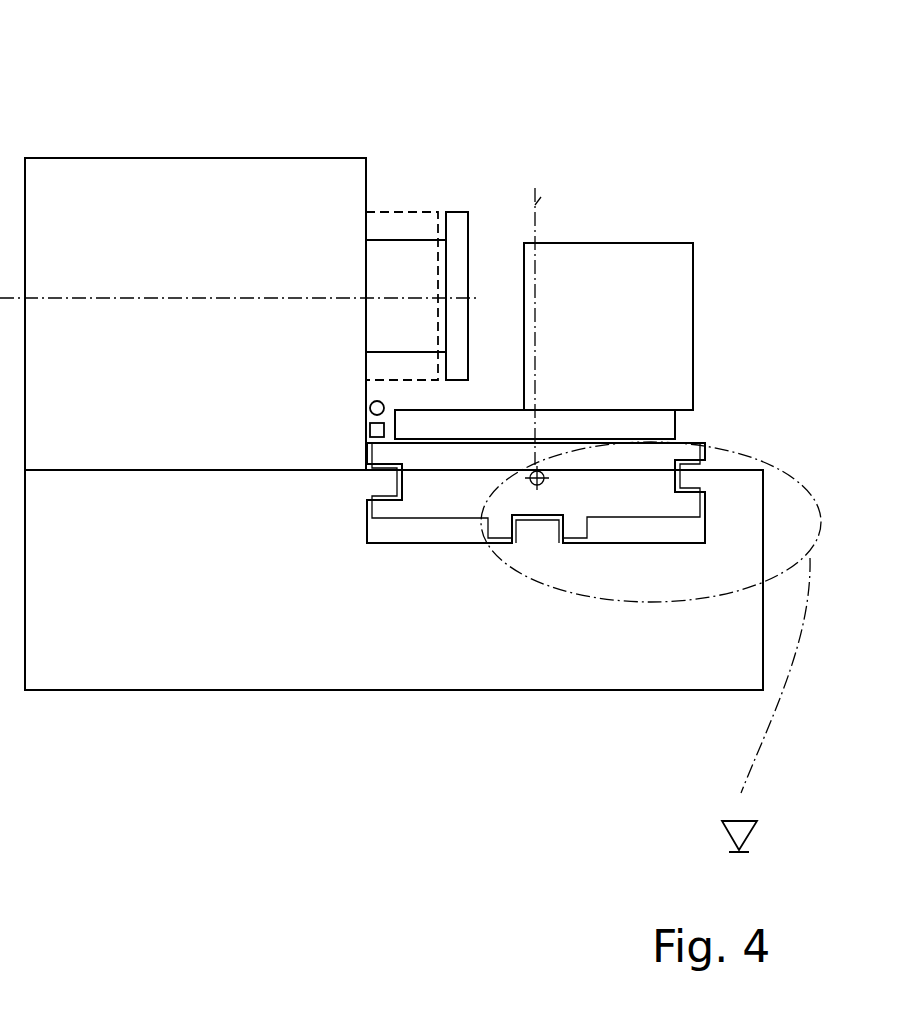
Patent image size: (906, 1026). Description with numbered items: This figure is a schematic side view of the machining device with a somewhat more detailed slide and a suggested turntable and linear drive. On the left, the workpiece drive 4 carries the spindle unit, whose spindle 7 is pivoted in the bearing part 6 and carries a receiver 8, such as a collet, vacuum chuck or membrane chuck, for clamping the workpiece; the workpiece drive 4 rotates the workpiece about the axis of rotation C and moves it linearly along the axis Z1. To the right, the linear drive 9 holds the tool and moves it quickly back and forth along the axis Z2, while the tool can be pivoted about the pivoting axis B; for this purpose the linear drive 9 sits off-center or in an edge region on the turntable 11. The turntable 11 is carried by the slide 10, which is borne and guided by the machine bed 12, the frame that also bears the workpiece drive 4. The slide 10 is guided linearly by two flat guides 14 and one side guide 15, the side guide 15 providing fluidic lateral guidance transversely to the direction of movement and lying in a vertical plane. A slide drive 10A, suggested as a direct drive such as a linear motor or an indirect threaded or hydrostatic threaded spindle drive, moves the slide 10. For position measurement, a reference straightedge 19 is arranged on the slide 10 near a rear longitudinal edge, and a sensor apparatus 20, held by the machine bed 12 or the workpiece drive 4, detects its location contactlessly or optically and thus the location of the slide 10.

The workpiece drive 4 is at (210, 185).
The sensor apparatus 20 is at (376, 401).
The spindle 7 is at (415, 253).
The bearing part 6 is at (437, 212).
The receiver 8 is at (458, 223).
The pivoting axis B is at (552, 188).
The linear drive 9 is at (626, 268).
The turntable 11 is at (656, 428).
The flat guide 14 is at (700, 480).
The machine bed 12 is at (113, 628).
The reference straightedge 19 is at (368, 432).
The slide 10 is at (438, 483).
The slide drive 10A is at (531, 478).
The side guide 15 is at (538, 524).